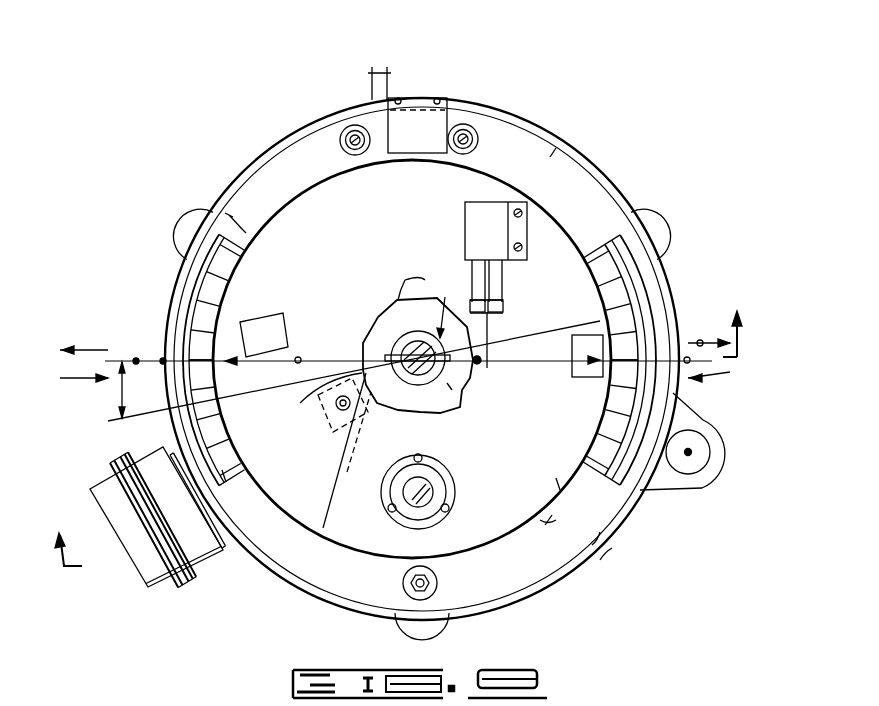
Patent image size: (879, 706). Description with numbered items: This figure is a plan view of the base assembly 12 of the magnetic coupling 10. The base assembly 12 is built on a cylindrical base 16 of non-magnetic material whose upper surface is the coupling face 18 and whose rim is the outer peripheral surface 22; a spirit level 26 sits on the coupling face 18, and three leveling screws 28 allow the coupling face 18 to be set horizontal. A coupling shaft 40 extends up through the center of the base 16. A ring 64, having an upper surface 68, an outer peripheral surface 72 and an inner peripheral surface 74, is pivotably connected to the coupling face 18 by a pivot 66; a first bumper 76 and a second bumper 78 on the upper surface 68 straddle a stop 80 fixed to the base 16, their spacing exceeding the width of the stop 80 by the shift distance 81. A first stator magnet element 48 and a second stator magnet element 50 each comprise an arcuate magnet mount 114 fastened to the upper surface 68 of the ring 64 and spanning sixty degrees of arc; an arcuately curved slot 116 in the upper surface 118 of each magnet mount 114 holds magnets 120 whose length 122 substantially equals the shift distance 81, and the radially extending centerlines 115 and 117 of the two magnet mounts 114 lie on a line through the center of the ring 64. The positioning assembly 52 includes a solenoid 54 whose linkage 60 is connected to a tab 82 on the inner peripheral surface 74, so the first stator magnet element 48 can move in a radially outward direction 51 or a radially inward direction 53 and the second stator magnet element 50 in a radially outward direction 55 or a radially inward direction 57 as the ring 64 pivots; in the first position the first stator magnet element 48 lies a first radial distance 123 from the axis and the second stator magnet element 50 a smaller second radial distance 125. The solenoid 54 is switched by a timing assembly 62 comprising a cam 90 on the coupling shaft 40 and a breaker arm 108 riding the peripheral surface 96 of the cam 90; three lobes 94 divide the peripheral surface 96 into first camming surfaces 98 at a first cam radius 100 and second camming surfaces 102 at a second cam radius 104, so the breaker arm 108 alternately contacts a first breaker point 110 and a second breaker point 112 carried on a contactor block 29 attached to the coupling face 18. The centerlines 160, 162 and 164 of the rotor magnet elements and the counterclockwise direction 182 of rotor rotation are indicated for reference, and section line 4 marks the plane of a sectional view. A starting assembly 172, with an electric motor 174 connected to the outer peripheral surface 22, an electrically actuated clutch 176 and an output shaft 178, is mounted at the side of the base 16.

The magnetic coupling 10 is at (593, 75).
The base assembly 12 is at (632, 528).
The cylindrical base 16 is at (585, 570).
The coupling face 18 is at (540, 482).
The outer peripheral surface 22 is at (640, 500).
The spirit level 26 is at (430, 508).
The leveling screws 28 is at (199, 210).
The terminal block 29 is at (499, 245).
The coupling shaft 40 is at (396, 340).
The first stator magnet element 48 is at (415, 333).
The second stator magnet element 50 is at (632, 276).
The radially outward direction 51 is at (100, 347).
The positioning assembly 52 is at (290, 598).
The radially inward direction 53 is at (76, 380).
The solenoid 54 is at (143, 557).
The radially outward direction 55 is at (700, 340).
The radially inward direction 57 is at (730, 372).
The linkage 60 is at (336, 425).
The timing assembly 62 is at (405, 280).
The ring 64 is at (550, 157).
The pivot 66 is at (438, 584).
The upper surface 68 is at (560, 541).
The outer peripheral surface 72 is at (612, 548).
The inner peripheral surface 74 is at (545, 525).
The first bumper 76 is at (355, 124).
The second bumper 78 is at (466, 123).
The stop 80 is at (416, 106).
The shift distance 81 is at (380, 70).
The tab 82 is at (305, 439).
The cam 90 is at (397, 365).
The lobes 94 is at (402, 305).
The peripheral surface 96 is at (448, 412).
The first camming surfaces 98 is at (470, 338).
The first cam radius 100 is at (456, 309).
The second camming surfaces 102 is at (318, 384).
The second cam radius 104 is at (455, 386).
The breaker arm 108 is at (490, 332).
The first breaker point 110 is at (478, 262).
The second breaker point 112 is at (504, 280).
The magnet mount 114 is at (222, 470).
The radially extending centerline 115 is at (137, 358).
The arcuately curved slot 116 is at (196, 290).
The radially extending centerline 117 is at (690, 370).
The upper surface 118 is at (205, 252).
The magnets 120 is at (210, 288).
The length 122 is at (243, 228).
The first radial distance 123 is at (300, 362).
The second radial distance 125 is at (578, 368).
The centerline 160 is at (164, 358).
The centerline 162 is at (525, 543).
The centerline 164 is at (523, 167).
The starting assembly 172 is at (722, 444).
The electric motor 174 is at (712, 476).
The electrically actuated clutch 176 is at (697, 440).
The output shaft 178 is at (692, 453).
The counterclockwise direction 182 is at (452, 33).
The section 4- 4 is at (394, 426).